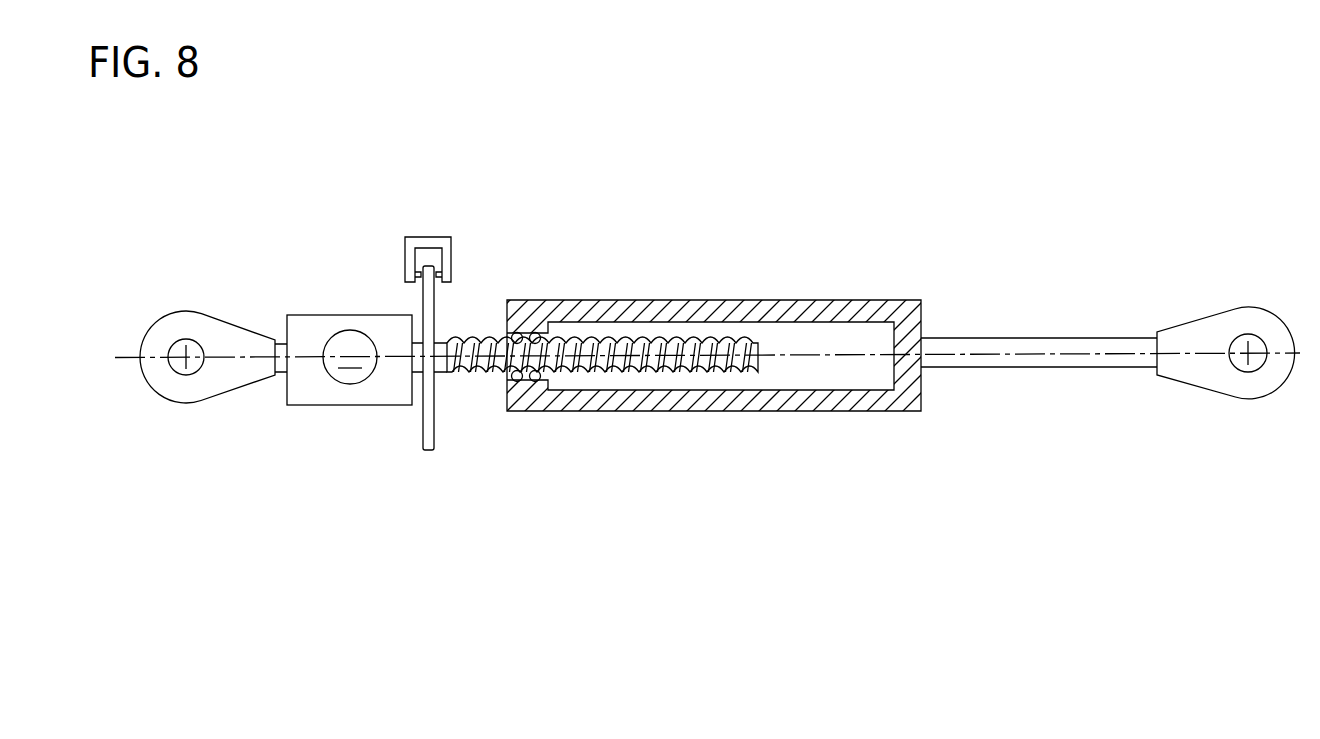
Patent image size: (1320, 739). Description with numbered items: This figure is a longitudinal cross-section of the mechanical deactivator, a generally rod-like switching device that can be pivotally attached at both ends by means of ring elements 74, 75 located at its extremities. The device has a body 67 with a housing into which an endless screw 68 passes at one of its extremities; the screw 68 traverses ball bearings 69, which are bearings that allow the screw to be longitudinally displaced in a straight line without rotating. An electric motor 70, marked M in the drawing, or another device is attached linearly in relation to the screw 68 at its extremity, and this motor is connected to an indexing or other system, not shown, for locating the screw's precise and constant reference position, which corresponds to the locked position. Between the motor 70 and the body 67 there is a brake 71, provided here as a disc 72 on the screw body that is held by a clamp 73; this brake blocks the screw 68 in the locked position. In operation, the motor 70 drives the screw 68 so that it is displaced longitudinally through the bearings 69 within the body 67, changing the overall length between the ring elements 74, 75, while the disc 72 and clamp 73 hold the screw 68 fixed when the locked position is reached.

The body 67 is at (817, 285).
The endless screw 68 is at (661, 365).
The ball bearings 69 is at (528, 330).
The electric motor 70 is at (315, 335).
The brake 71 is at (388, 420).
The disc 72 is at (425, 438).
The clamp 73 is at (438, 225).
The ring element 74 is at (178, 393).
The ring element 75 is at (1243, 318).